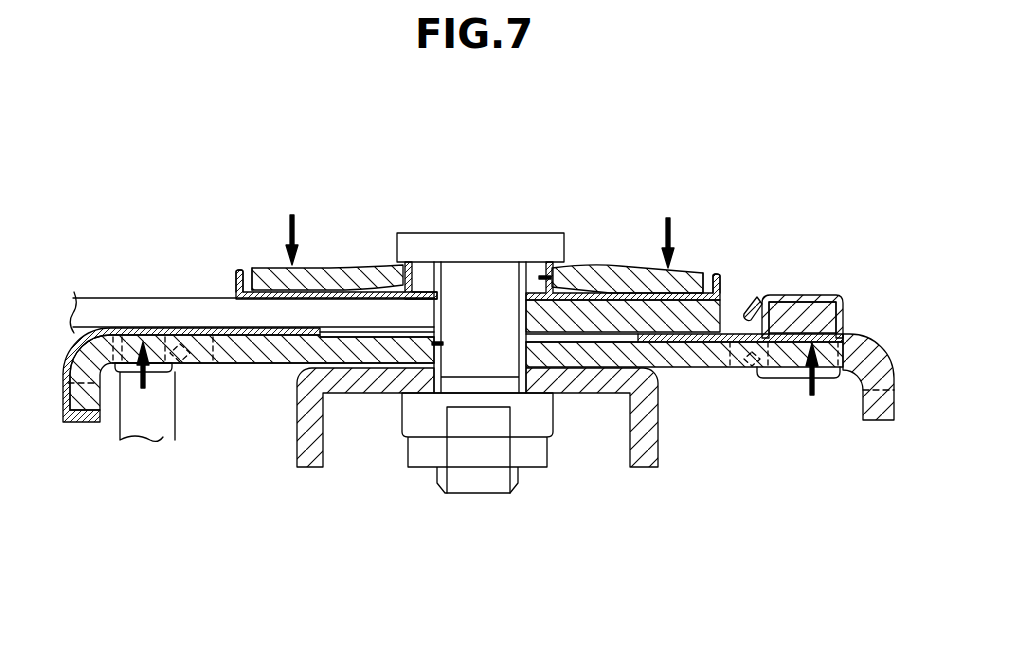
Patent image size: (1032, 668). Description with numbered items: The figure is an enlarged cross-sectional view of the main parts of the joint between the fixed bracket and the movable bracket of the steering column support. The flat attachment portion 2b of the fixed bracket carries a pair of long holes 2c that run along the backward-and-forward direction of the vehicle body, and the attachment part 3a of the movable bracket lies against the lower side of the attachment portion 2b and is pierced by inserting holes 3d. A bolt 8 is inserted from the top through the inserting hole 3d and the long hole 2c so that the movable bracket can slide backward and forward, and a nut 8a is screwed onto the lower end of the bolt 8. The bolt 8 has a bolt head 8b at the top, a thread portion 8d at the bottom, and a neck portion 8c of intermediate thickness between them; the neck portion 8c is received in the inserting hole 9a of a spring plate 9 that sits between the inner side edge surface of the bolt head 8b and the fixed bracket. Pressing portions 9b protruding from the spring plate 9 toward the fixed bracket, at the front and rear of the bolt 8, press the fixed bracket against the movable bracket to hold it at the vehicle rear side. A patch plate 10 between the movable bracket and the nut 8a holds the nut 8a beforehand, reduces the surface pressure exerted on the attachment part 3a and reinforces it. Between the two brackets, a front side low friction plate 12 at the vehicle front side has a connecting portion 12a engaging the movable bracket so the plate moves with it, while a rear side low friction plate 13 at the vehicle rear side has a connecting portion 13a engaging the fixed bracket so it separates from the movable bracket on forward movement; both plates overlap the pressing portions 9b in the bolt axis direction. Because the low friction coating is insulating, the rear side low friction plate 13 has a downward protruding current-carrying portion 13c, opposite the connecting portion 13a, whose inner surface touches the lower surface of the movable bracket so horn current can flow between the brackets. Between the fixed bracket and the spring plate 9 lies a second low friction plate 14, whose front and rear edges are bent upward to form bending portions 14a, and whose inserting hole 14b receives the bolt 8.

The long holes 2c is at (137, 303).
The attachment portion 2b is at (585, 325).
The attachment part 3a is at (372, 350).
The inserting holes 3d is at (441, 345).
The bolt 8 is at (493, 305).
The nut 8a is at (541, 425).
The bolt head 8b is at (420, 240).
The neck portion 8c is at (467, 272).
The thread portion 8d is at (485, 317).
The spring plate 9 is at (607, 268).
The inserting hole 9a is at (540, 278).
The pressing portions 9b is at (275, 268).
The patch plate 10 is at (653, 443).
The front side low friction plate 12 is at (257, 337).
The connecting portion 12a is at (175, 440).
The rear side low friction plate 13 is at (740, 372).
The connecting portion 13a is at (747, 303).
The current-carrying portion 13c is at (840, 378).
The second low friction plate 14 is at (357, 267).
The bending portions 14a is at (238, 270).
The inserting hole 14b is at (433, 292).